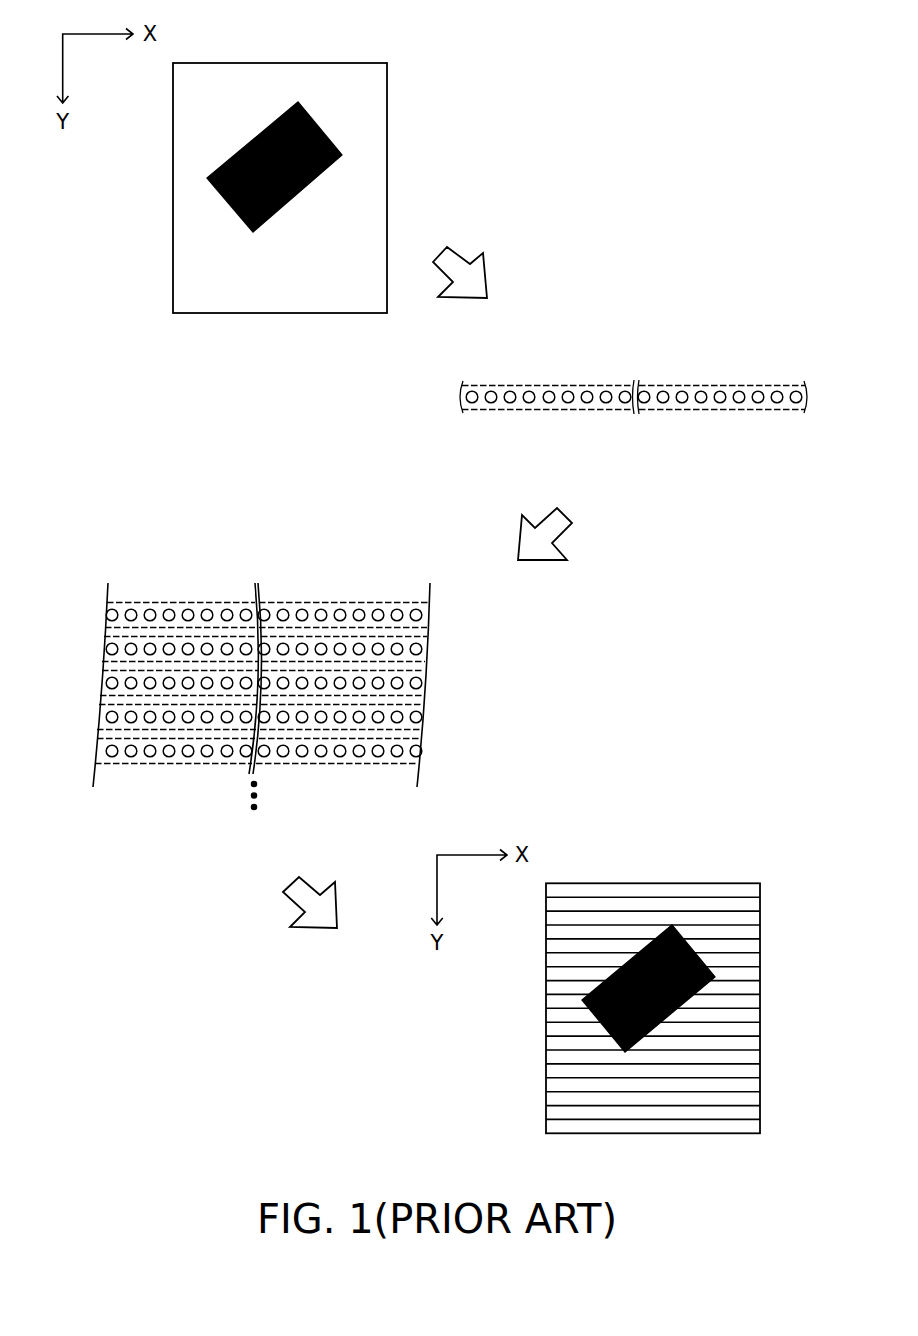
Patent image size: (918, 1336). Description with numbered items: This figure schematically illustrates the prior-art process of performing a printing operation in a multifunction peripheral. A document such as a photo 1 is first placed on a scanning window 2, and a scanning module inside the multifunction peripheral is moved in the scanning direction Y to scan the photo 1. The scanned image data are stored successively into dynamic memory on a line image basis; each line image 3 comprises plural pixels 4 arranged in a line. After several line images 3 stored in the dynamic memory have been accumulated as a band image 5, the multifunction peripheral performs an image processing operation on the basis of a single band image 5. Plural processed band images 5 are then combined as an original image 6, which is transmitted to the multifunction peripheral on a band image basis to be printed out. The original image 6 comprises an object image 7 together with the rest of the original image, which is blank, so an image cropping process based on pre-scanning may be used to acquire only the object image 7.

The photo 1 is at (333, 137).
The scanning window 2 is at (327, 70).
The line image 3 is at (717, 385).
The pixel 4 is at (663, 401).
The band image 5 is at (356, 578).
The original image 6 is at (742, 865).
The object image 7 is at (677, 1008).